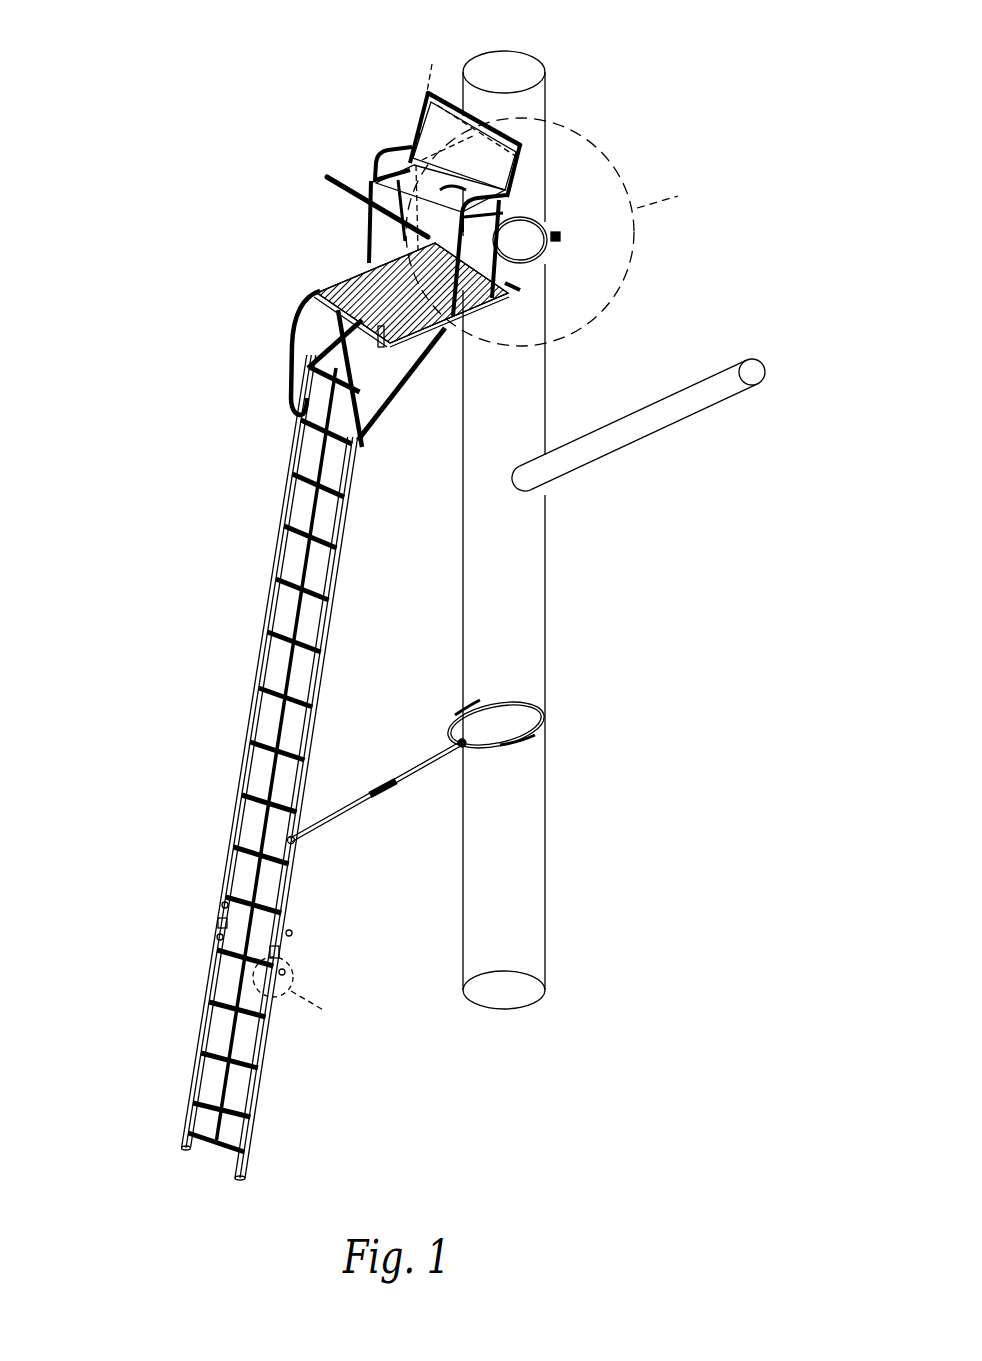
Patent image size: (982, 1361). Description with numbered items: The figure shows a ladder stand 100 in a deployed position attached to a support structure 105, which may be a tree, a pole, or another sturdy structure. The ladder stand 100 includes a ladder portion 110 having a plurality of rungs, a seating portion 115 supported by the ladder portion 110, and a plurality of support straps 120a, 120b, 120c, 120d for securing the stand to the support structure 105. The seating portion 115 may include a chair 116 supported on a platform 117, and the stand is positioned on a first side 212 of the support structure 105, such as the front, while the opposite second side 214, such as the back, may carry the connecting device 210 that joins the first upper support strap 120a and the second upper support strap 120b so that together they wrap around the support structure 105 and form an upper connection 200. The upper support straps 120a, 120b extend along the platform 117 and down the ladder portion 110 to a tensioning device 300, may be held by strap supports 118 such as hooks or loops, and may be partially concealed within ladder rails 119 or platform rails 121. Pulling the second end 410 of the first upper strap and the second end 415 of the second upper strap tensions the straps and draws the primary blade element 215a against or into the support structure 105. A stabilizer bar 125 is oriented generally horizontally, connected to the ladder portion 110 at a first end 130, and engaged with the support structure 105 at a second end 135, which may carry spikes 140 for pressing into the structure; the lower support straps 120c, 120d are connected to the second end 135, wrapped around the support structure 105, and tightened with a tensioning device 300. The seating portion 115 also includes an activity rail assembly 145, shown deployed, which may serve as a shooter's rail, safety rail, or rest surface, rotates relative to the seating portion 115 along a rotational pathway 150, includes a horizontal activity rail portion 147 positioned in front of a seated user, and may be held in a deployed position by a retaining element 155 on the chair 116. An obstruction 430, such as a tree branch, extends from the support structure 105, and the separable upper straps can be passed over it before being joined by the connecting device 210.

The ladder stand 100 is at (117, 373).
The support structure 105 is at (515, 585).
The ladder portion 110 is at (250, 705).
The seating portion 115 is at (386, 95).
The chair 116 is at (327, 177).
The platform 117 is at (388, 260).
The strap supports 118 is at (355, 450).
The ladder rails 119 is at (333, 357).
The first upper support strap 120a is at (225, 905).
The second upper support strap 120b is at (545, 263).
The lower support strap 120c is at (460, 718).
The lower support strap 120d is at (530, 745).
The platform rails 121 is at (365, 266).
The stabilizer bar 125 is at (376, 799).
The first end 130 is at (293, 845).
The second end 135 is at (440, 750).
The spikes 140 is at (470, 750).
The activity rail assembly 145 is at (315, 157).
The horizontal activity rail portion 147 is at (412, 193).
The rotational pathway 150 is at (373, 117).
The retaining element 155 is at (560, 237).
The upper connection 200 is at (585, 199).
The connecting device 210 is at (537, 217).
The first side 212 is at (440, 510).
The second side 214 is at (562, 518).
The primary blade element 215a is at (513, 288).
The tensioning device 300 is at (535, 700).
The second end of first upper support strap 410 is at (215, 925).
The second end of second upper support strap 415 is at (272, 952).
The obstruction 430 is at (705, 412).